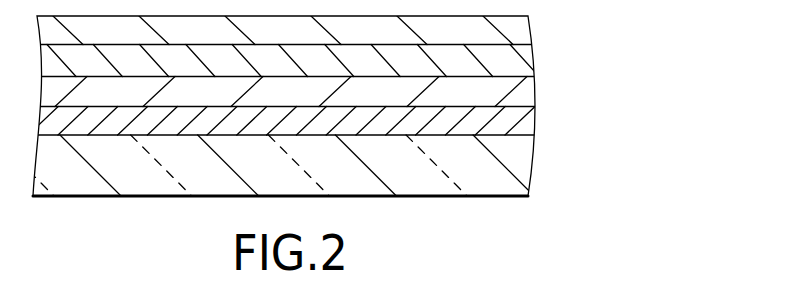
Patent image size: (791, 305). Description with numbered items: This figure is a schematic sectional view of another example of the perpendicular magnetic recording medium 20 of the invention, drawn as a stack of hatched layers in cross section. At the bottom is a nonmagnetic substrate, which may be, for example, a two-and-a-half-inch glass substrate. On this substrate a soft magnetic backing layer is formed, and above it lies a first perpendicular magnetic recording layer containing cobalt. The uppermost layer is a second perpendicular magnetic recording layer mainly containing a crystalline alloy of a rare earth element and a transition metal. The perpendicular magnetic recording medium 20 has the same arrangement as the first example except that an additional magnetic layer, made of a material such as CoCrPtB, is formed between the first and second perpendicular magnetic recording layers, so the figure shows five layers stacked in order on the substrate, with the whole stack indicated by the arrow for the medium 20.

The perpendicular magnetic recording medium 20 is at (625, 76).